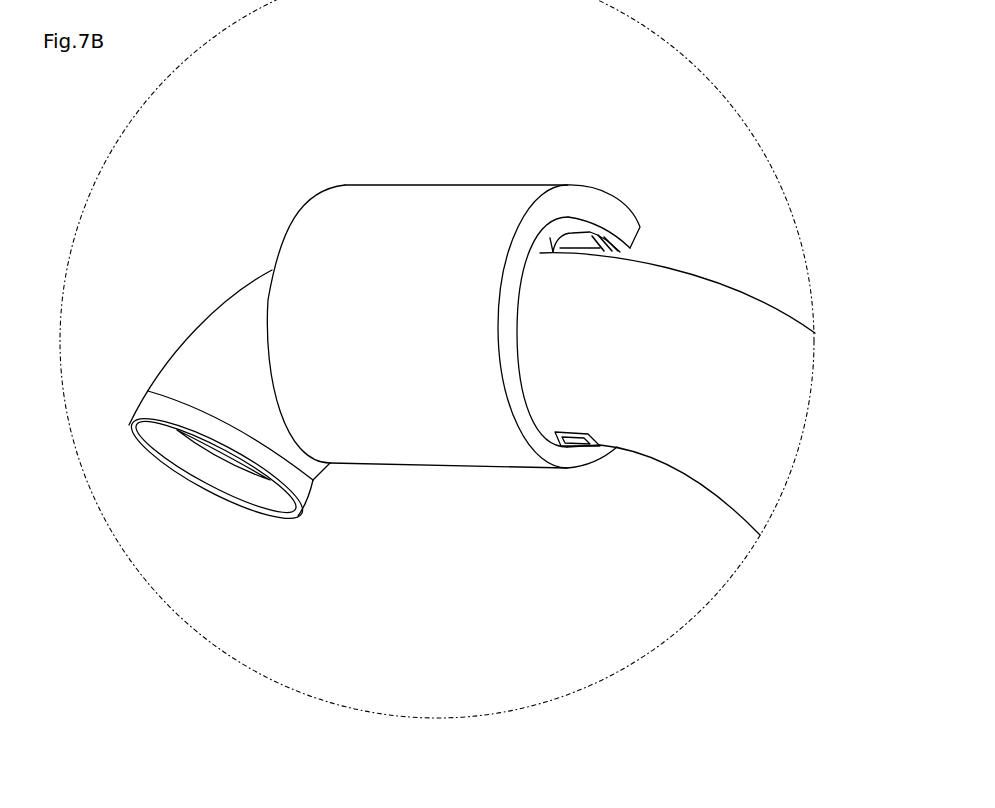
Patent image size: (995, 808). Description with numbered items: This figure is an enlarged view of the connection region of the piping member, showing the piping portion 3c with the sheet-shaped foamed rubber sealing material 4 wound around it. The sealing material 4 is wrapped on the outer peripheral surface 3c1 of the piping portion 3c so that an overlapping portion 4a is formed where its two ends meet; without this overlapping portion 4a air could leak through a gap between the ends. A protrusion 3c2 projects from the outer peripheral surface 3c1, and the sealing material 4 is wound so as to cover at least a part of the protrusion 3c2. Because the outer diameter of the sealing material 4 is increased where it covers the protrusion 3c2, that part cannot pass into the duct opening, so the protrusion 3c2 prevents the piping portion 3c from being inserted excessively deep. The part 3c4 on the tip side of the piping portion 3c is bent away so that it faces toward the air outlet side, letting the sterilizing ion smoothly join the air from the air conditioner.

The foamed rubber sealing material 4 is at (280, 195).
The overlapping portion 4a is at (590, 197).
The piping portion 3c is at (724, 264).
The outer peripheral surface 3c1 is at (692, 452).
The protrusion 3c2 is at (587, 243).
The part on a tip side 3c4 is at (213, 328).